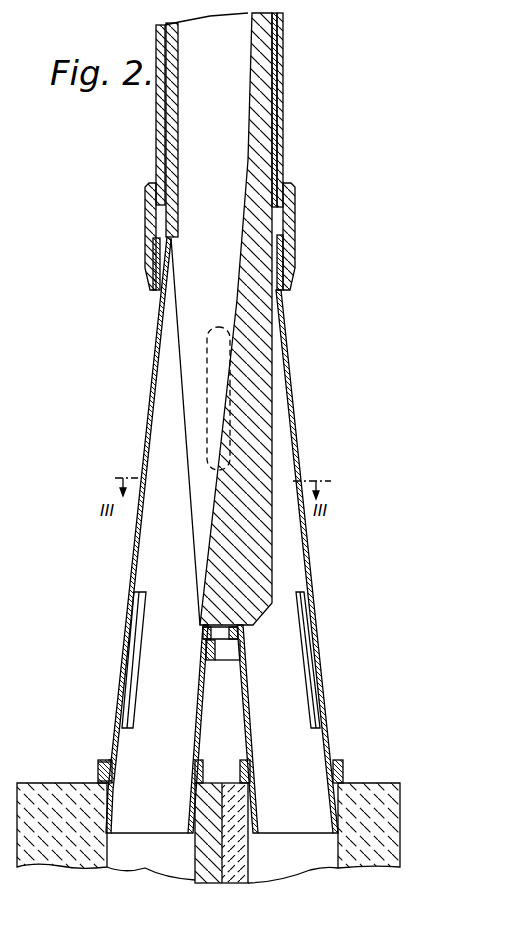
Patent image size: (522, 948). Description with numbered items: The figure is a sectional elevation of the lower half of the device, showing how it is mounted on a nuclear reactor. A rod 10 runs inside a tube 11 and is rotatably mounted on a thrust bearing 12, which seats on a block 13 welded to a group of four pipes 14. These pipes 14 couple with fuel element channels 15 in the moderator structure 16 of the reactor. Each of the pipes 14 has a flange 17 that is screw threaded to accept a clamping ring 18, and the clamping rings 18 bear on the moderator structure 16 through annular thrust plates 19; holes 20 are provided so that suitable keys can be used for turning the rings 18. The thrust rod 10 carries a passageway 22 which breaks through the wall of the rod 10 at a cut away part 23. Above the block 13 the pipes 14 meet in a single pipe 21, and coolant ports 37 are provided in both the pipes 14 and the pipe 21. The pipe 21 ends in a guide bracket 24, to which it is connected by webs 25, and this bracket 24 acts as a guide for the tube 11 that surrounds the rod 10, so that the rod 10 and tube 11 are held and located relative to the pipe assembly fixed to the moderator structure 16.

The rod 10 is at (278, 66).
The tube 11 is at (279, 98).
The thrust bearing 12 is at (204, 634).
The block 13 is at (210, 652).
The pipes 14 is at (250, 726).
The fuel element channels 15 is at (152, 862).
The moderator structure 16 is at (236, 872).
The flanges 17 is at (110, 760).
The clamping rings 18 is at (98, 773).
The annular thrust plates 19 is at (113, 784).
The holes 20 is at (99, 764).
The single pipe 21 is at (278, 298).
The passageway 22 is at (188, 360).
The cut away part 23 is at (163, 530).
The guide bracket 24 is at (295, 223).
The webs 25 is at (283, 272).
The coolant ports 37 is at (207, 410).